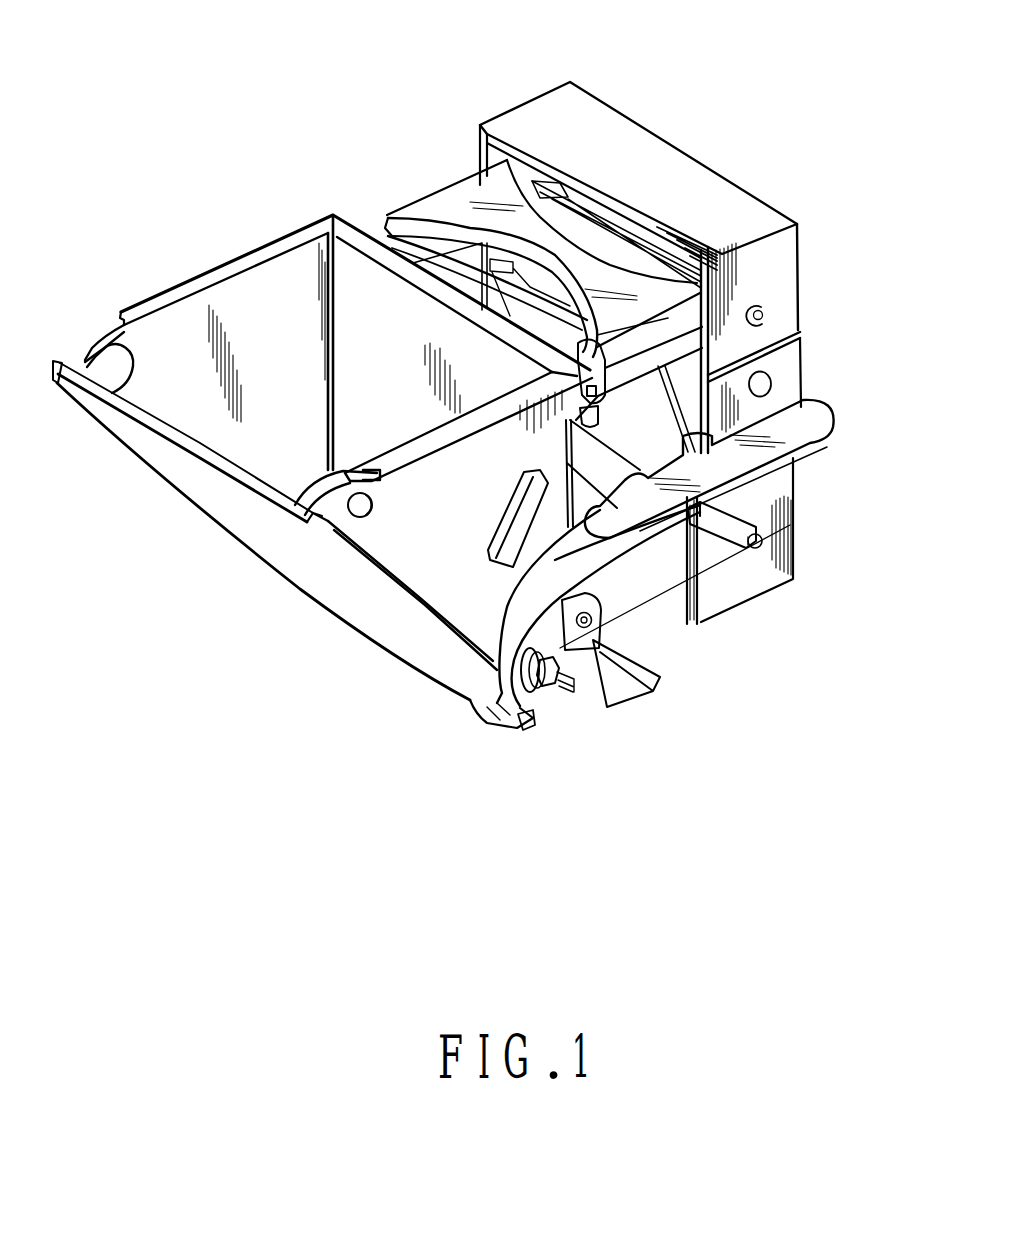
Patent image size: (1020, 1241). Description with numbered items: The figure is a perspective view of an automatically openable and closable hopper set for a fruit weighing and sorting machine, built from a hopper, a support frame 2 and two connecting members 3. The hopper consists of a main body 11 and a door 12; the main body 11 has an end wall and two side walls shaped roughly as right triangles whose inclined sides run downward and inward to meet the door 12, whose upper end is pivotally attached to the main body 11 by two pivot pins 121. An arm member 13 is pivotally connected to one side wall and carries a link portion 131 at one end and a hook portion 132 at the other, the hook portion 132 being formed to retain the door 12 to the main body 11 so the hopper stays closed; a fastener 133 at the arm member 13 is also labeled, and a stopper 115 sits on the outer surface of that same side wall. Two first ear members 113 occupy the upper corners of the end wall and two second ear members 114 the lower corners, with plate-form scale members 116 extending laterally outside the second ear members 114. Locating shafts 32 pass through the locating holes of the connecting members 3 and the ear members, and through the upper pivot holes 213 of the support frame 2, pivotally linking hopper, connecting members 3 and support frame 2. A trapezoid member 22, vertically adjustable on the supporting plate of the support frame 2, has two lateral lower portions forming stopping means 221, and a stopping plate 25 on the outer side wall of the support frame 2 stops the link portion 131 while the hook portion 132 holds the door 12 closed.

The support frame 2 is at (566, 110).
The connecting members 3 is at (457, 216).
The main body 11 is at (240, 297).
The door 12 is at (264, 535).
The arm member 13 is at (556, 660).
The trapezoid member 22 is at (705, 462).
The stopping plate 25 is at (725, 466).
The locating shafts 32 is at (620, 237).
The first ear members 113 is at (685, 395).
The second ear members 114 is at (597, 687).
The stopper 115 is at (490, 534).
The scale members 116 is at (597, 707).
The pivot pins 121 is at (355, 517).
The link portion 131 is at (617, 543).
The hook portion 132 is at (487, 717).
The bolt 133 is at (535, 710).
The pivot holes 213 is at (760, 302).
The stopping means 221 is at (725, 545).